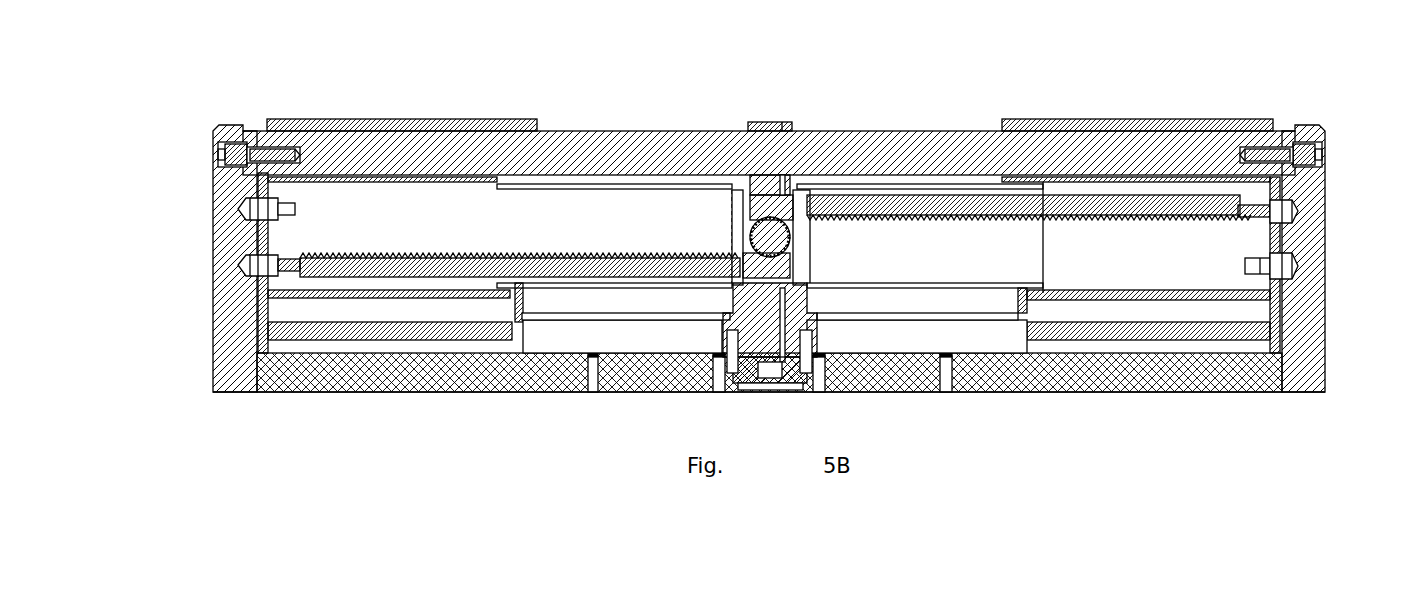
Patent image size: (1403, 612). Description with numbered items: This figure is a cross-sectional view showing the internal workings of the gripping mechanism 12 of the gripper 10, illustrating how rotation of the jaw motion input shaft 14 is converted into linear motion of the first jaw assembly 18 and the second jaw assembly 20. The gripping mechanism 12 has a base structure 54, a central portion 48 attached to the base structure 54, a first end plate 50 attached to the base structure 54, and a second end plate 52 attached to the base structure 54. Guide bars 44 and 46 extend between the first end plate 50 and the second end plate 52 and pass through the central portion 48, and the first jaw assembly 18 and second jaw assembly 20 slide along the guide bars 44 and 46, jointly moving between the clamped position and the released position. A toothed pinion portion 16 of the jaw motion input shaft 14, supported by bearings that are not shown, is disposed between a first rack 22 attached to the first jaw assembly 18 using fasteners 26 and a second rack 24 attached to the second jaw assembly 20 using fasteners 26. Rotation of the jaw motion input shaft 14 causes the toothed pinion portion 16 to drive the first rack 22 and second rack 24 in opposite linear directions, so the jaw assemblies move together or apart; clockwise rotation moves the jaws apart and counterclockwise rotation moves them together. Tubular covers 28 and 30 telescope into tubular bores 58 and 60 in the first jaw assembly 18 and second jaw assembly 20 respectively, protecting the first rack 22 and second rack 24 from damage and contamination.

The gripper 10 is at (630, 100).
The gripping mechanism 12 is at (1308, 393).
The jaw motion input shaft 14 is at (750, 227).
The toothed pinion portion 16 is at (787, 237).
The first jaw assembly 18 is at (392, 120).
The second jaw assembly 20 is at (1080, 120).
The first rack 22 is at (583, 252).
The second rack 24 is at (928, 222).
The fasteners 26 is at (282, 255).
The tubular cover 28 is at (653, 183).
The tubular cover 30 is at (853, 183).
The guide bar 44 is at (472, 130).
The guide bar 46 is at (552, 317).
The central portion 48 is at (762, 123).
The first end plate 50 is at (213, 225).
The second end plate 52 is at (1327, 217).
The base structure 54 is at (442, 393).
The tubular bore 58 is at (347, 180).
The tubular bore 60 is at (1165, 178).